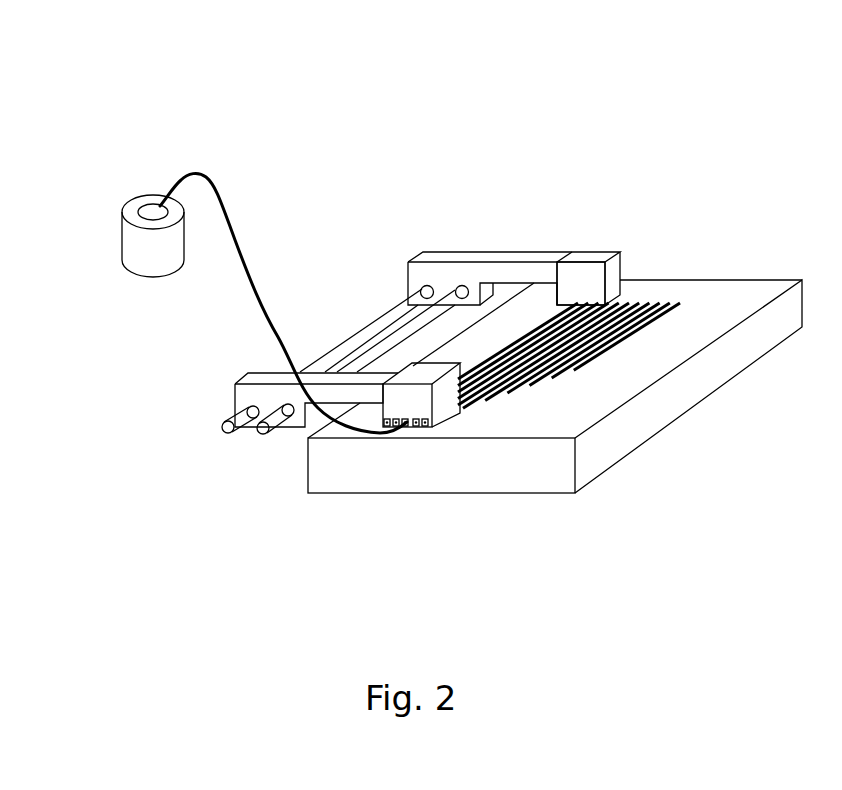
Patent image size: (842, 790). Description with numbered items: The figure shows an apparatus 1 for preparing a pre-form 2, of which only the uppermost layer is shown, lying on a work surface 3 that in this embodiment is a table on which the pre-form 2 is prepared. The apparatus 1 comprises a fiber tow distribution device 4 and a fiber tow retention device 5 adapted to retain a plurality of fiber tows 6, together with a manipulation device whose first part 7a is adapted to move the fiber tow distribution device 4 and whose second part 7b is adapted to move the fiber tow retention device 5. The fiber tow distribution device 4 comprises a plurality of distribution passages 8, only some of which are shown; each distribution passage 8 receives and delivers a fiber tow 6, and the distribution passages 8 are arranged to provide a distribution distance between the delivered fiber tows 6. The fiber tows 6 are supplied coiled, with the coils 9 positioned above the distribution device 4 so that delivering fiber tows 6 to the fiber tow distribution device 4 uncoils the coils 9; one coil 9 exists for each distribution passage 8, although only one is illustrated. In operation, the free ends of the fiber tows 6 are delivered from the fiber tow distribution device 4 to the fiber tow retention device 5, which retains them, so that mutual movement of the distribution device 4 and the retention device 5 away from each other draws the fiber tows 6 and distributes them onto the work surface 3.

The apparatus 1 is at (311, 146).
The pre-form 2 is at (660, 336).
The work surface 3 is at (555, 386).
The fiber tow distribution device 4 is at (466, 456).
The fiber tow retention device 5 is at (580, 243).
The fiber tow 6 is at (442, 267).
The first part of the manipulation device 7a is at (283, 372).
The second part of the manipulation device 7b is at (440, 258).
The distribution passage 8 is at (370, 506).
The coil 9 is at (150, 243).